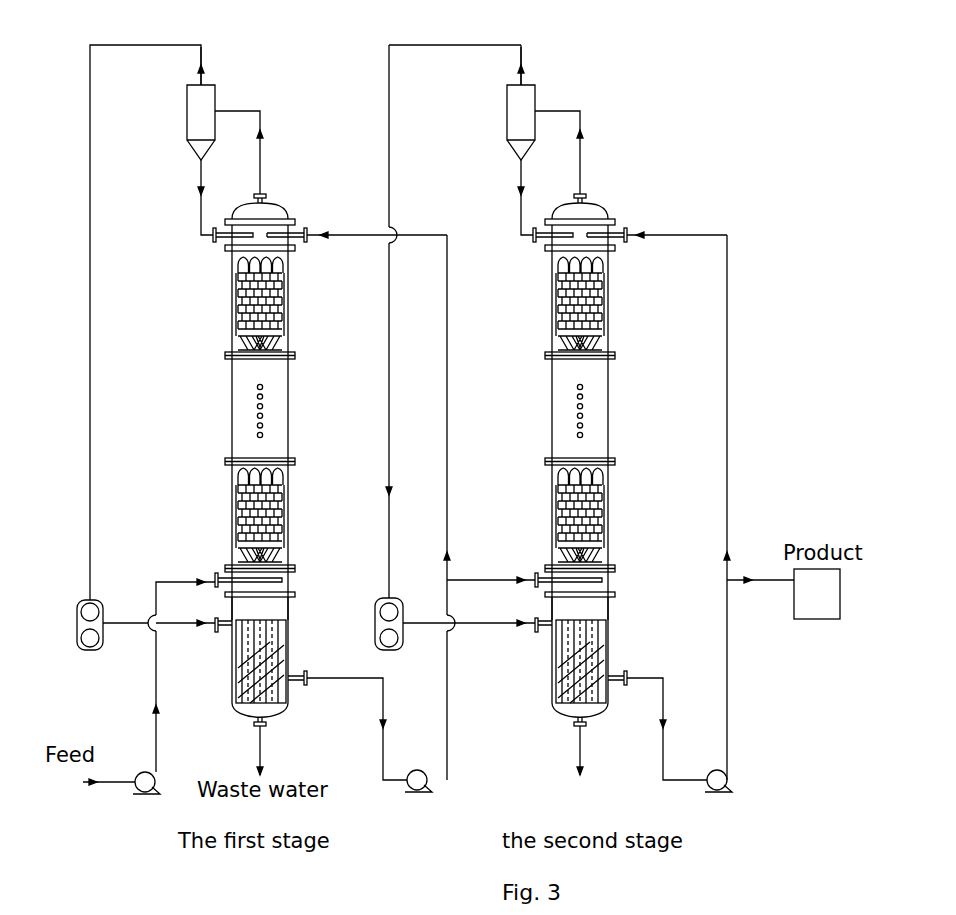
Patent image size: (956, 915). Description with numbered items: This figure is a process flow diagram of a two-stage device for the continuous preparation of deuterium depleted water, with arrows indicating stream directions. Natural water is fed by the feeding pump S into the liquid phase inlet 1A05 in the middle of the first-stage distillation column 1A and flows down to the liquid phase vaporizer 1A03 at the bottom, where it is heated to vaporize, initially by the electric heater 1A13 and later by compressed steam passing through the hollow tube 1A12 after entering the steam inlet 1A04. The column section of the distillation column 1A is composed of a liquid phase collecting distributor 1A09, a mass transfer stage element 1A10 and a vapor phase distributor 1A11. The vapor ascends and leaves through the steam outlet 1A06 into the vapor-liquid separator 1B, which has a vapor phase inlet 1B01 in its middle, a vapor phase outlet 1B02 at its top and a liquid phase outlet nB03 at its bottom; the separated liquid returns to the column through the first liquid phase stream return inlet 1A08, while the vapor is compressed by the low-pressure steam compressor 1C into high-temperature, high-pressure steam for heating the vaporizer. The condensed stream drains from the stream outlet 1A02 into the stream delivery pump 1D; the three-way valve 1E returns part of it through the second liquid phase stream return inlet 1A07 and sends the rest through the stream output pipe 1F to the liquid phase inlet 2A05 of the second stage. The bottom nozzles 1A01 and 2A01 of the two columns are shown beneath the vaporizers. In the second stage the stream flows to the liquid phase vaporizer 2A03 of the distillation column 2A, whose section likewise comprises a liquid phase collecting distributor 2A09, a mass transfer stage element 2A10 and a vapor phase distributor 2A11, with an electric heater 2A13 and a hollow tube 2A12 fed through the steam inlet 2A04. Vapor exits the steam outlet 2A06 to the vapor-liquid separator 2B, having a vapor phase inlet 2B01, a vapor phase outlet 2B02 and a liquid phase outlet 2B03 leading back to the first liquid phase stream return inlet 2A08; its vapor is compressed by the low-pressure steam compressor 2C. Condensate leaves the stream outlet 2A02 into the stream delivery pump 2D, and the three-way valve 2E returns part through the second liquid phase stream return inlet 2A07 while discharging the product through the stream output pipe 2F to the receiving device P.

The distillation column 1A is at (280, 408).
The bottom outlet nozzle 1A01 is at (267, 730).
The stream outlet 1A02 is at (303, 672).
The liquid phase vaporizer 1A03 is at (284, 640).
The steam inlet 1A04 is at (214, 631).
The liquid phase inlet 1A05 is at (215, 577).
The steam outlet 1A06 is at (268, 195).
The second liquid phase stream return inlet 1A07 is at (312, 232).
The first liquid phase stream return inlet 1A08 is at (212, 240).
The liquid phase collecting distributor 1A09 is at (286, 262).
The mass transfer stage element 1A10 is at (290, 293).
The vapor phase distributor 1A11 is at (290, 338).
The hollow tube 1A12 is at (250, 653).
The electric heater 1A13 is at (241, 708).
The vapor-liquid separator 1B is at (215, 88).
The vapor phase inlet 1B01 is at (217, 110).
The vapor phase outlet 1B02 is at (203, 83).
The liquid phase outlet nB03 is at (203, 158).
The low-pressure steam compressor 1C is at (80, 628).
The stream delivery pump 1D is at (426, 791).
The three-way valve 1E is at (443, 584).
The stream output pipe 1F is at (491, 573).
The feeding pump S is at (136, 795).
The distillation column 2A is at (616, 453).
The bottom outlet nozzle 2A01 is at (600, 746).
The stream outlet 2A02 is at (655, 662).
The liquid phase vaporizer 2A03 is at (627, 611).
The steam inlet 2A04 is at (525, 637).
The liquid phase inlet 2A05 is at (552, 567).
The steam outlet 2A06 is at (613, 187).
The second liquid phase stream return inlet 2A07 is at (653, 221).
The first liquid phase stream return inlet 2A08 is at (522, 247).
The liquid phase collecting distributor 2A09 is at (621, 265).
The mass transfer stage element 2A10 is at (620, 304).
The vapor phase distributor 2A11 is at (621, 340).
The hollow tube 2A12 is at (556, 661).
The electric heater 2A13 is at (570, 717).
The vapor-liquid separator 2B is at (563, 99).
The vapor phase inlet 2B01 is at (564, 144).
The vapor phase outlet 2B02 is at (541, 60).
The liquid phase outlet 2B03 is at (508, 196).
The low-pressure steam compressor 2C is at (376, 640).
The stream delivery pump 2D is at (726, 791).
The three-way valve 2E is at (723, 584).
The stream output pipe 2F is at (760, 590).
The receiving device P is at (805, 612).